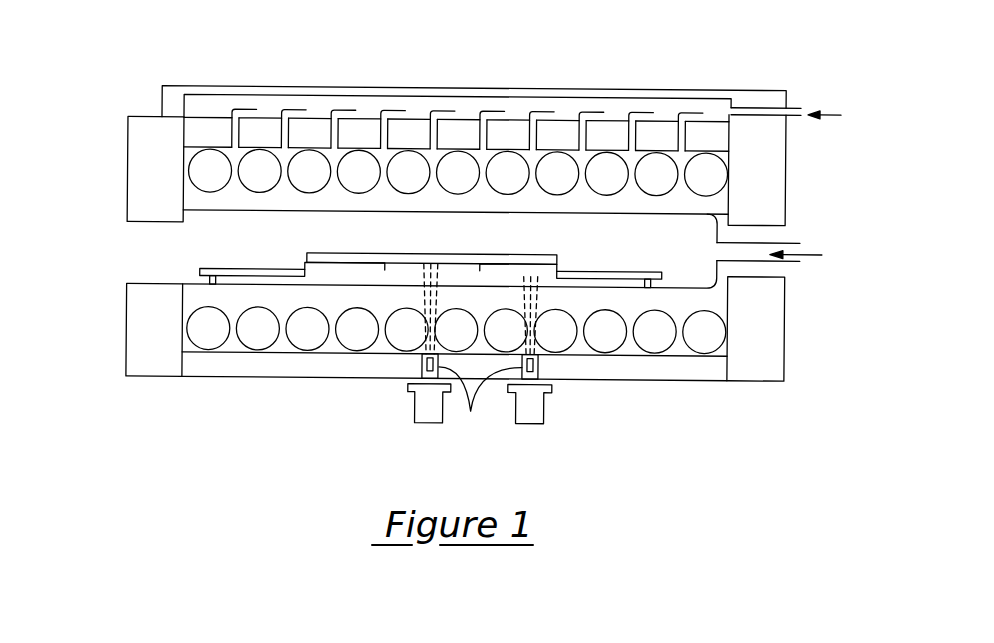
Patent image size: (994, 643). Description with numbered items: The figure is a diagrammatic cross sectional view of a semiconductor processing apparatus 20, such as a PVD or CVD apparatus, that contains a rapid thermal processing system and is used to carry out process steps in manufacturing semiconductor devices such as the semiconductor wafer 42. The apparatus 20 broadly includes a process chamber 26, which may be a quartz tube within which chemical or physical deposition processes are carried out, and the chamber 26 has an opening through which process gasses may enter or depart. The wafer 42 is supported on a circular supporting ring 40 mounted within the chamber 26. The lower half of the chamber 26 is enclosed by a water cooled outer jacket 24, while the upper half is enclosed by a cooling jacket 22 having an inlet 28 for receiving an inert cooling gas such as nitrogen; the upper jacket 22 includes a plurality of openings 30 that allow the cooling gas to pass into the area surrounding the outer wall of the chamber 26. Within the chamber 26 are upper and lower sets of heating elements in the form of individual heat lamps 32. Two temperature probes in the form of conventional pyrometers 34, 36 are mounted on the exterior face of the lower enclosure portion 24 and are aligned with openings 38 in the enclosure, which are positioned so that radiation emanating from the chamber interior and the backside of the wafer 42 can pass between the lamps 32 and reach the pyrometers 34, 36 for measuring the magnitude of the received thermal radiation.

The processing apparatus 20 is at (104, 306).
The cooling jacket 22 is at (142, 163).
The water cooled outer jacket 24 is at (142, 350).
The process chamber 26 is at (767, 262).
The inlet 28 is at (788, 107).
The openings 30 is at (285, 132).
The heat lamps 32 is at (357, 171).
The pyrometer 34 is at (428, 412).
The pyrometer 36 is at (536, 412).
The openings 38 is at (472, 411).
The supporting ring 40 is at (256, 272).
The semiconductor wafer 42 is at (490, 254).